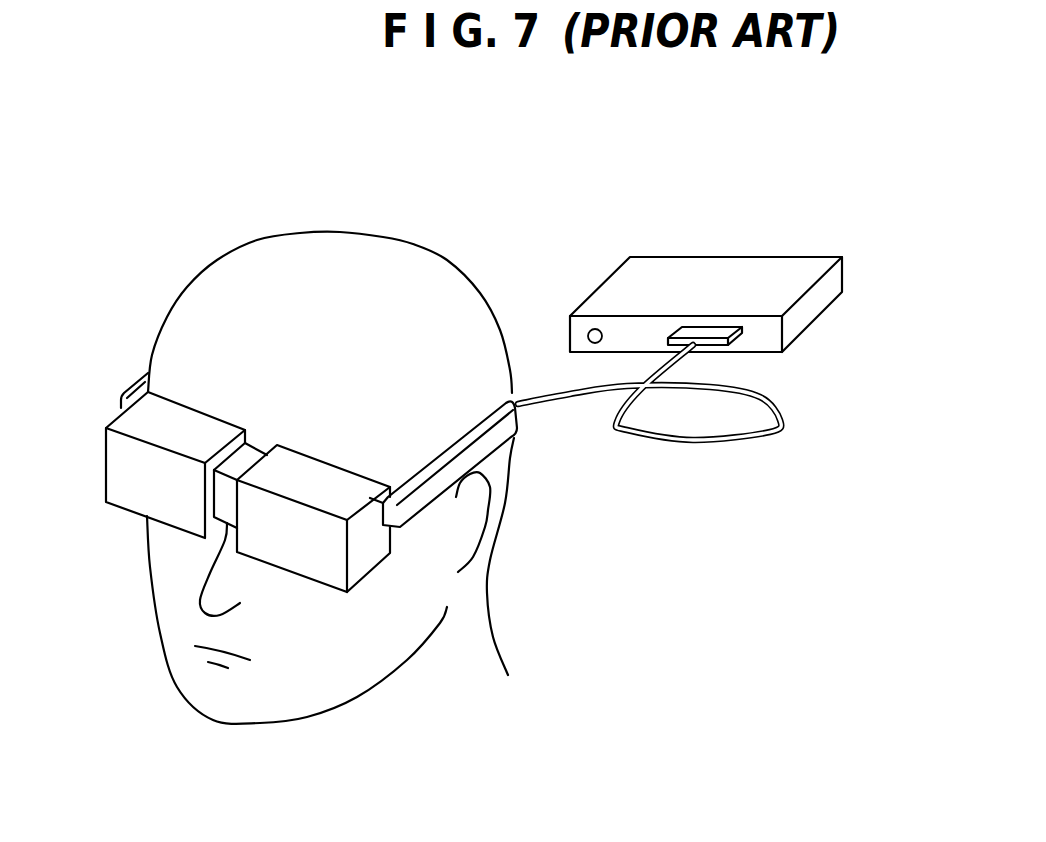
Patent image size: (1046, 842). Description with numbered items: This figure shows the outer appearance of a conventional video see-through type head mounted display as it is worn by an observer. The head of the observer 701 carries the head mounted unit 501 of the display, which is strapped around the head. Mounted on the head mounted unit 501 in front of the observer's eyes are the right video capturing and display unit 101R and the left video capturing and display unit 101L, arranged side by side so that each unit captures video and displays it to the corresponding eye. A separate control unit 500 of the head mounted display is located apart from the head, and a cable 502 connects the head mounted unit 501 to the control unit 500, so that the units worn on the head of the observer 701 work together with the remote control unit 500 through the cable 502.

The head of the observer 701 is at (386, 258).
The right video capturing and display unit 101R is at (138, 493).
The left video capturing and display unit 101L is at (370, 552).
The head mounted unit 501 is at (123, 393).
The control unit 500 is at (733, 270).
The cable 502 is at (718, 442).